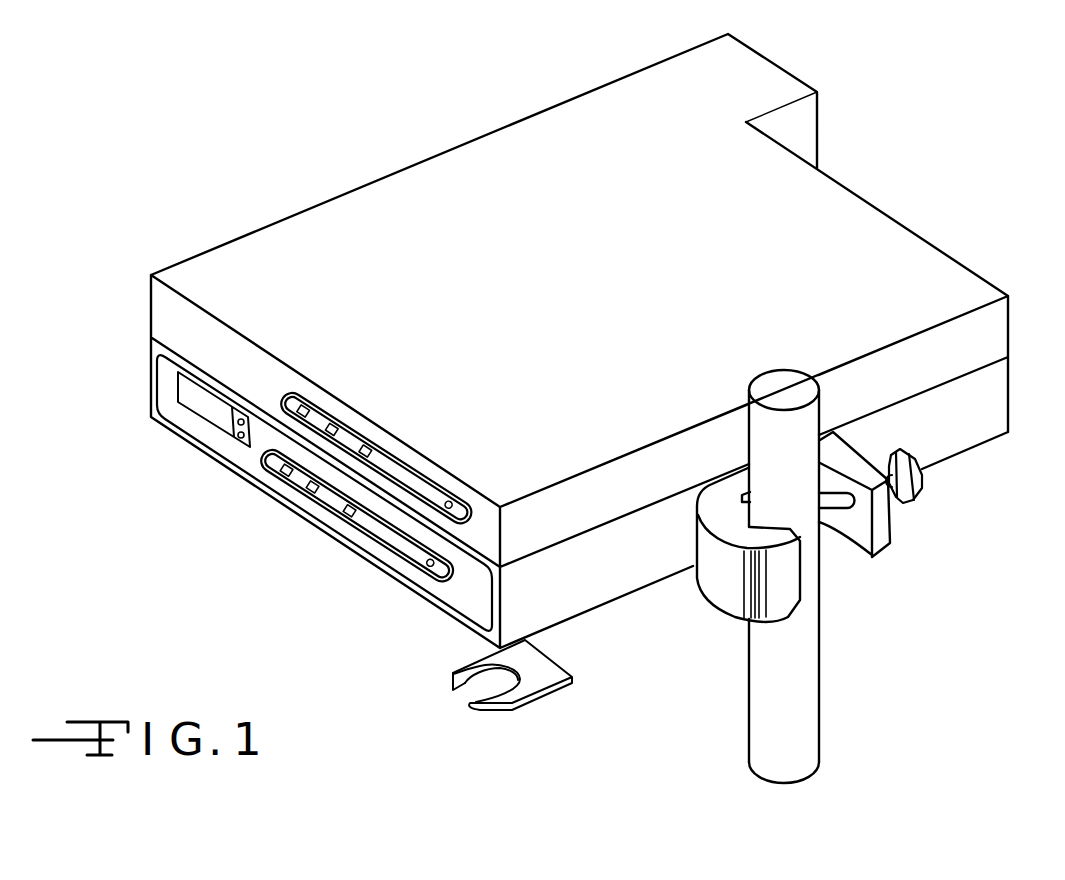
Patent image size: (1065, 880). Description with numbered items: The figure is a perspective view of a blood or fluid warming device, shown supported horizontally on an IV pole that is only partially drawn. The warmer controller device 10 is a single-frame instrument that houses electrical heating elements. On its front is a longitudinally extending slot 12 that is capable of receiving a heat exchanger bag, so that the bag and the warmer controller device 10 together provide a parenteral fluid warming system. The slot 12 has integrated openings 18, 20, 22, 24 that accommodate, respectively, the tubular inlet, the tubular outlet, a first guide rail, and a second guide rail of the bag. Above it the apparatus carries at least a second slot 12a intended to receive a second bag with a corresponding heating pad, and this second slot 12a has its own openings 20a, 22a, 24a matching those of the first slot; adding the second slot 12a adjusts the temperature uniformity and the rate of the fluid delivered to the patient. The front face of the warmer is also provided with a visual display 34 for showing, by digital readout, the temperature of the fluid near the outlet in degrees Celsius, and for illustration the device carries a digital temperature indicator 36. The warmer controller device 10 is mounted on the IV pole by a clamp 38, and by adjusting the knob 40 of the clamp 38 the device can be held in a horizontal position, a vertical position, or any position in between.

The warmer controller device 10 is at (873, 205).
The slot 12 is at (380, 537).
The second slot 12a is at (365, 453).
The opening 18 is at (307, 495).
The opening 20 is at (345, 520).
The opening 20a is at (332, 425).
The opening 22 is at (283, 474).
The opening 22a is at (317, 407).
The opening 24 is at (424, 568).
The opening 24a is at (447, 505).
The visual display 34 is at (175, 375).
The digital temperature indicator 36 is at (180, 405).
The clamp 38 is at (790, 580).
The knob 40 is at (908, 473).